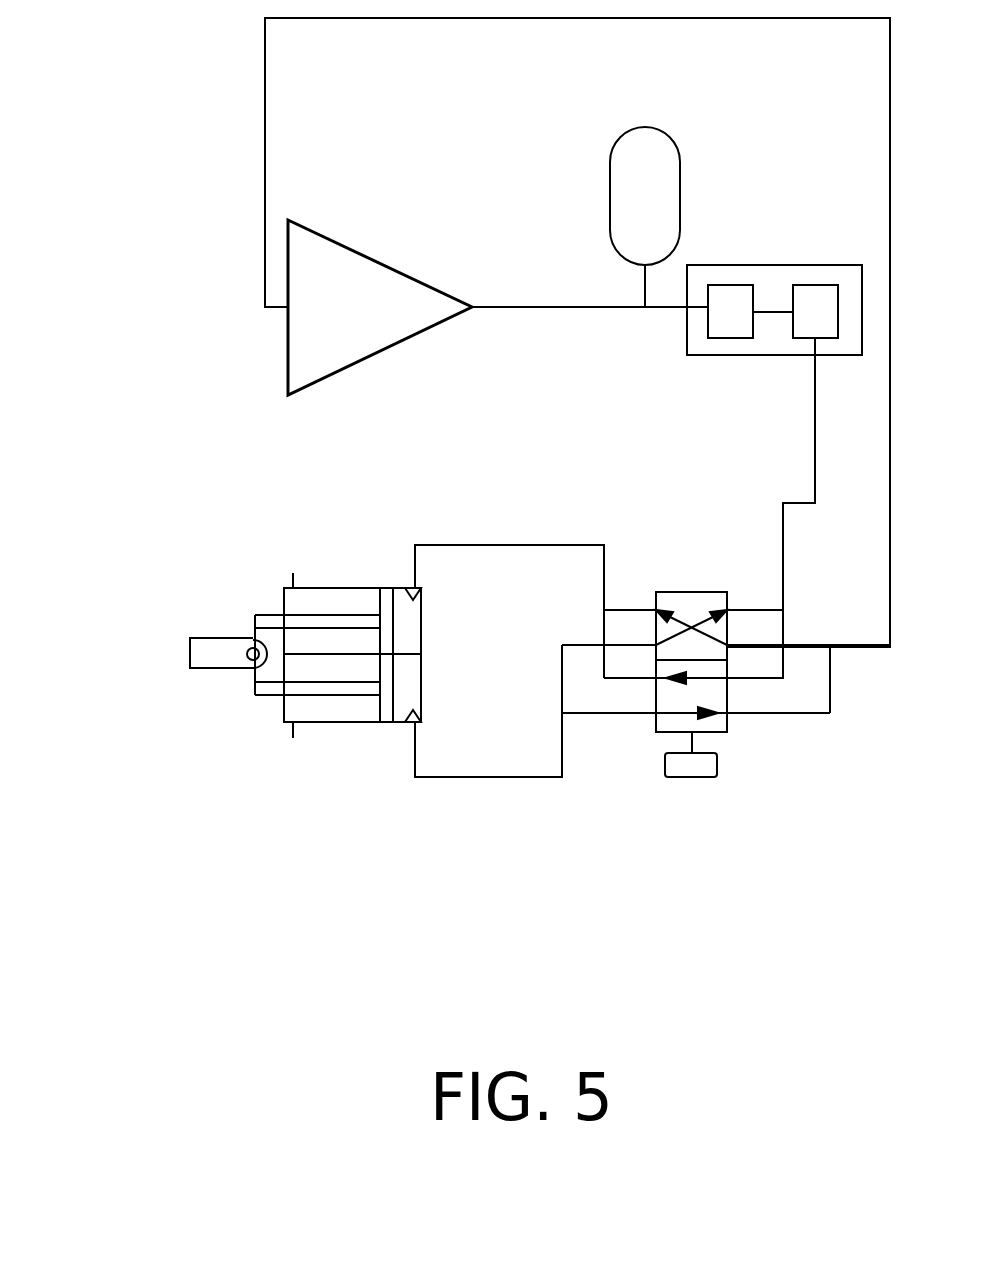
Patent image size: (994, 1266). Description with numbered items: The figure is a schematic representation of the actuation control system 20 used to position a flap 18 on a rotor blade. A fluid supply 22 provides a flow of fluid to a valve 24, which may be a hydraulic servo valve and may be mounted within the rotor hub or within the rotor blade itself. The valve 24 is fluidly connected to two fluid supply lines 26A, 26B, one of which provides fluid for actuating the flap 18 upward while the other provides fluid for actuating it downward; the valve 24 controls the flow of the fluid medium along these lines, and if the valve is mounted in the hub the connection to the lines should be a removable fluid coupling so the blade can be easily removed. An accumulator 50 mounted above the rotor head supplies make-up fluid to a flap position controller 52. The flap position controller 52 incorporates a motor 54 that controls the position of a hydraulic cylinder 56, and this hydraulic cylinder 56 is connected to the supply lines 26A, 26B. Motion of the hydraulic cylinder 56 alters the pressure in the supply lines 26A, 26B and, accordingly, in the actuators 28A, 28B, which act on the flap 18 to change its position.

The flap 18 is at (216, 650).
The actuation control system 20 is at (215, 430).
The fluid supply 22 is at (356, 254).
The valve 24 is at (683, 592).
The first fluid supply line 26A is at (455, 545).
The second fluid supply line 26B is at (487, 777).
The first actuator 28A is at (337, 597).
The second actuator 28B is at (360, 713).
The accumulator 50 is at (650, 185).
The flap position controller 52 is at (742, 265).
The motor 54 is at (718, 318).
The hydraulic cylinder 56 is at (803, 320).